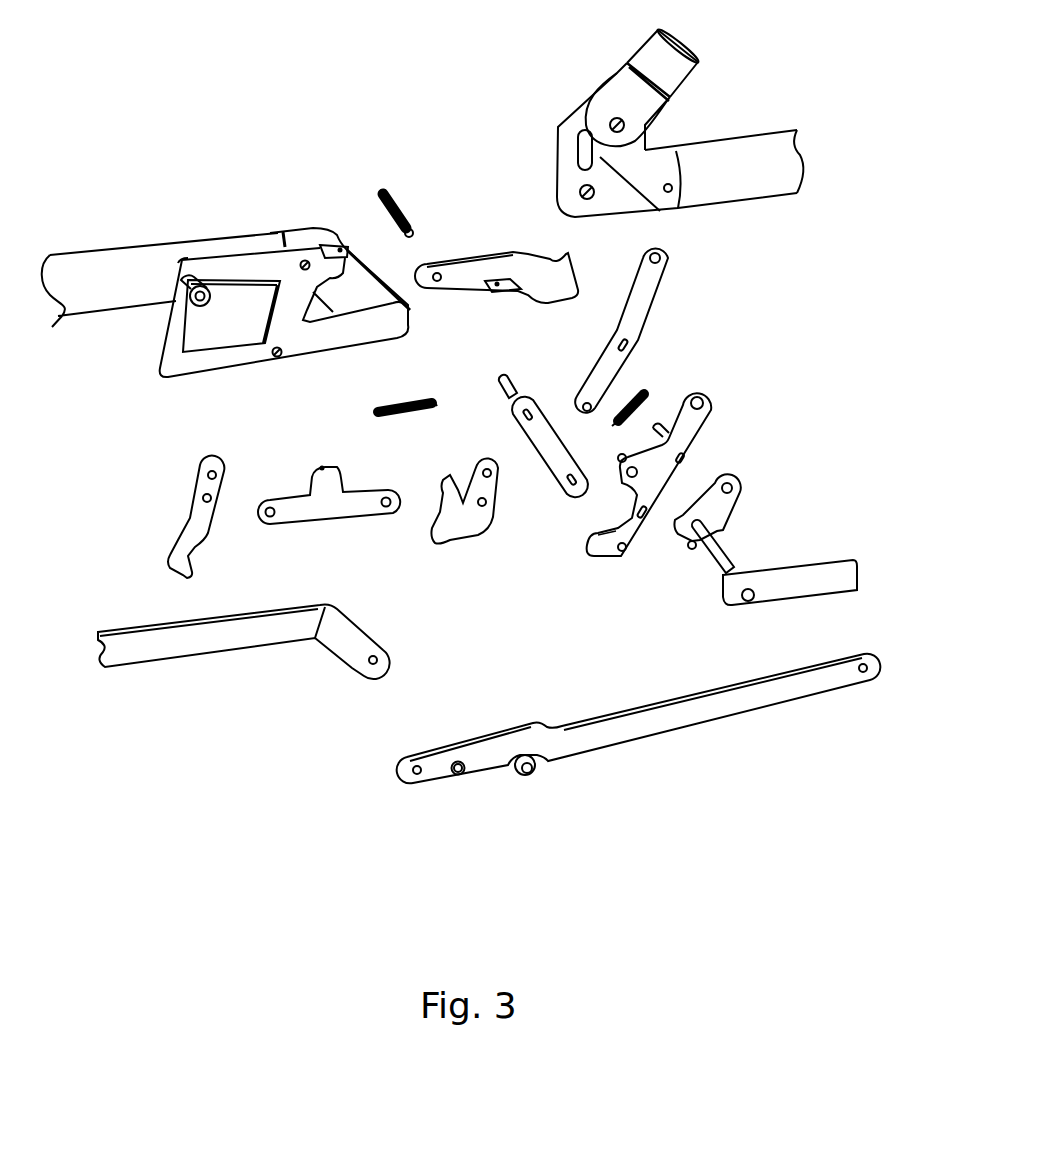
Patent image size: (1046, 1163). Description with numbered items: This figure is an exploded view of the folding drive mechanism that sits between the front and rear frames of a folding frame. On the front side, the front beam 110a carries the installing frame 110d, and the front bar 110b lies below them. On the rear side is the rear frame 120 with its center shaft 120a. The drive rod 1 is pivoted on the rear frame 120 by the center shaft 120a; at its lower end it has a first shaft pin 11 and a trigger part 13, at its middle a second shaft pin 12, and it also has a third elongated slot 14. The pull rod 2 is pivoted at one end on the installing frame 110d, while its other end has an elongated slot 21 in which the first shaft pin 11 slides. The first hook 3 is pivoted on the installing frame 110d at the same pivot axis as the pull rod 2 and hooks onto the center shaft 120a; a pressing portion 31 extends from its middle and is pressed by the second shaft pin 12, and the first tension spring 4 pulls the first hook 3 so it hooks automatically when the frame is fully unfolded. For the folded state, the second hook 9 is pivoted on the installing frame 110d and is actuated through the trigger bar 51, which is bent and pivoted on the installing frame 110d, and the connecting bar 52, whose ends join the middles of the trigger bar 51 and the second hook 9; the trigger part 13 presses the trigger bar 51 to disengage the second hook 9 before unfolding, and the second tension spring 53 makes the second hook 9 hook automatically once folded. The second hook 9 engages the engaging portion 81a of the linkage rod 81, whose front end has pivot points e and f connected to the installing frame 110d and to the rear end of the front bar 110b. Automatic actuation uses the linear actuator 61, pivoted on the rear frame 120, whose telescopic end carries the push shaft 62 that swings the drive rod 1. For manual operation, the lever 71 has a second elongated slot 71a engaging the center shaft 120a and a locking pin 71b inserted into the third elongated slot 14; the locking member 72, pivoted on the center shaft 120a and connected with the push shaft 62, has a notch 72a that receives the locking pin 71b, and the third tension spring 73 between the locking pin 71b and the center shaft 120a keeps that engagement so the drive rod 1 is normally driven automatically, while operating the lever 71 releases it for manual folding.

The front beam 110a is at (120, 275).
The installing frame 110d is at (232, 270).
The first tension spring 4 is at (381, 192).
The first hook 3 is at (470, 272).
The pressing portion 31 is at (505, 282).
The rear frame 120 is at (735, 165).
The lever 71 is at (650, 292).
The second elongated slot 71a is at (630, 343).
The locking pin 71b is at (578, 395).
The third tension spring 73 is at (645, 392).
The drive rod 1 is at (697, 418).
The second shaft pin 12 is at (616, 457).
The center shaft 120a is at (684, 459).
The third elongated slot 14 is at (643, 517).
The first shaft pin 11 is at (622, 551).
The trigger part 13 is at (600, 549).
The pull rod 2 is at (548, 450).
The elongated slot 21 is at (567, 493).
The second tension spring 53 is at (411, 400).
The second hook 9 is at (205, 522).
The connecting bar 52 is at (326, 502).
The trigger bar 51 is at (462, 522).
The locking member 72 is at (715, 512).
The notch 72a is at (692, 549).
The push shaft 62 is at (727, 560).
The linear actuator 61 is at (815, 575).
The front bar 110b is at (260, 632).
The linkage rod 81 is at (688, 716).
The engaging portion 81a is at (527, 773).
The pivot point e is at (417, 775).
The pivot point f is at (460, 773).